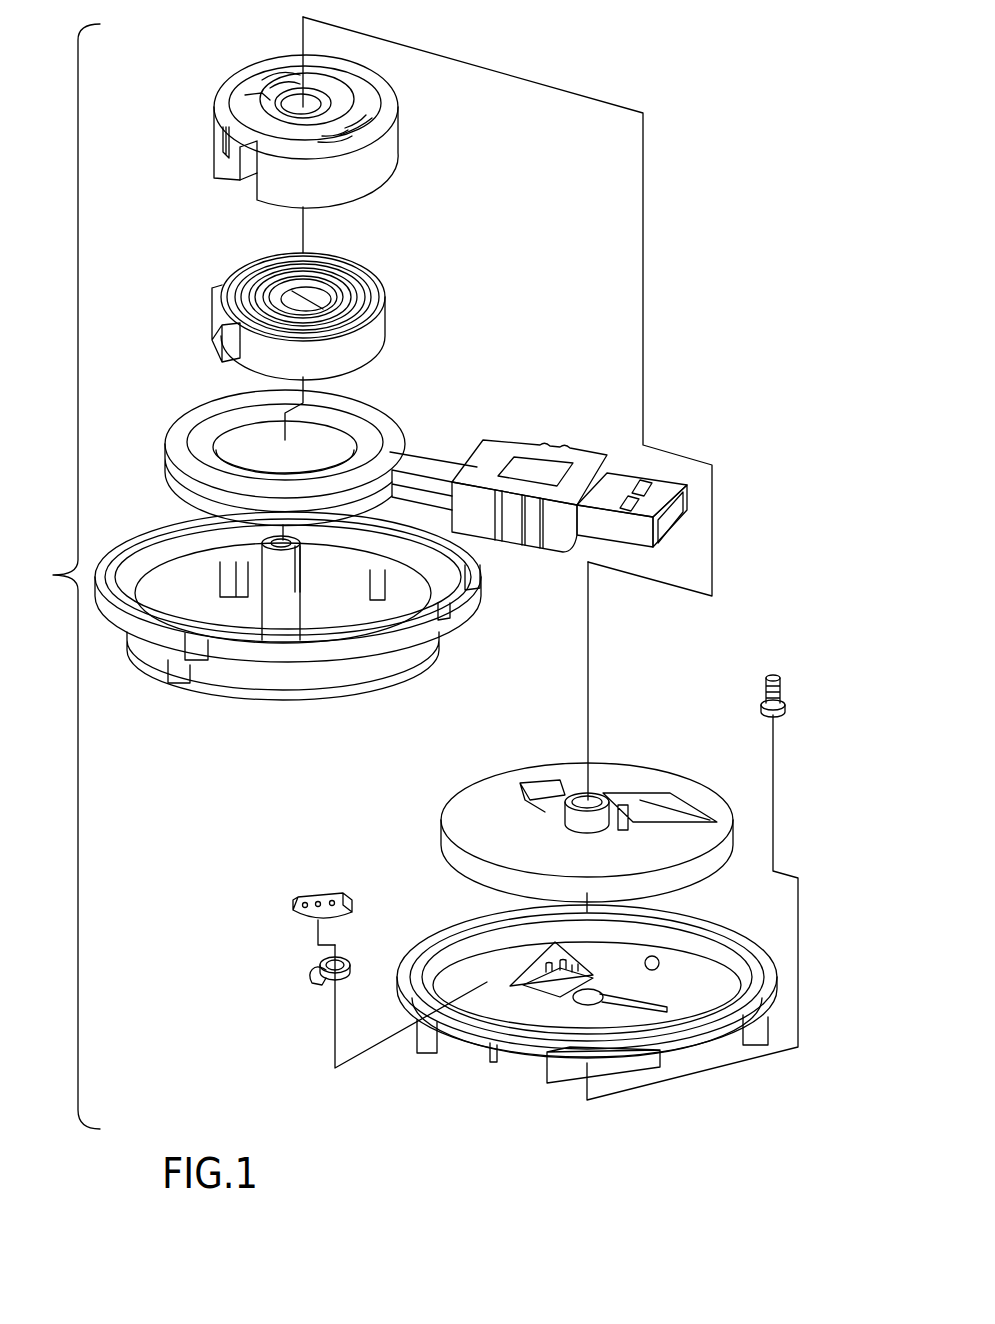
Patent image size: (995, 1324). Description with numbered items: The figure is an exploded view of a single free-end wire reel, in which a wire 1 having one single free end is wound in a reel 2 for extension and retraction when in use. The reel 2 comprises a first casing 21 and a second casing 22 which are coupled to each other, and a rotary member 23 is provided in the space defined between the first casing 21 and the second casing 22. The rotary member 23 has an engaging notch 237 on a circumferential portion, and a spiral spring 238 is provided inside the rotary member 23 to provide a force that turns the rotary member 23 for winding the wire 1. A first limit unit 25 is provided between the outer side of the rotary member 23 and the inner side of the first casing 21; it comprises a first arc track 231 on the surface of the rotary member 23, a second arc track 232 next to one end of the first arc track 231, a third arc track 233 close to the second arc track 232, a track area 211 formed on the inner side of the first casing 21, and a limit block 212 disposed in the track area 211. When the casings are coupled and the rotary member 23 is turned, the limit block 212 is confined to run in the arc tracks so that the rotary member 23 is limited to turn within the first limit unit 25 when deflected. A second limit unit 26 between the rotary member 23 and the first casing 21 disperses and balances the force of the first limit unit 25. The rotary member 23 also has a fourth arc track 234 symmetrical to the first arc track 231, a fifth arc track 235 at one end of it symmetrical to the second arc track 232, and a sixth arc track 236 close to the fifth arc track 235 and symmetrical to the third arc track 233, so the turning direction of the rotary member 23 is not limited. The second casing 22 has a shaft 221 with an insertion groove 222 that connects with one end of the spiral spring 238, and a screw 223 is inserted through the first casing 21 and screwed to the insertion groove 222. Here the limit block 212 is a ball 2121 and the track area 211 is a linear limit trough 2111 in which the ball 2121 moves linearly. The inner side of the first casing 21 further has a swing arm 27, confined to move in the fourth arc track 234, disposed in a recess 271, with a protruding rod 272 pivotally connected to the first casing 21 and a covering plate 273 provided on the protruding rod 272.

The wire 1 is at (200, 410).
The reel 2 is at (275, 828).
The first casing 21 is at (453, 935).
The second casing 22 is at (210, 698).
The rotary member 23 is at (195, 110).
The first limit unit 25 is at (60, 576).
The second limit unit 26 is at (393, 119).
The swing arm 27 is at (334, 975).
The track area 211 is at (640, 1085).
The limit block 212 is at (727, 1063).
The shaft 221 is at (291, 635).
The insertion groove 222 is at (302, 568).
The screw 223 is at (768, 677).
The first arc track 231 is at (335, 84).
The second arc track 232 is at (262, 93).
The third arc track 233 is at (278, 72).
The fourth arc track 234 is at (250, 150).
The fifth arc track 235 is at (370, 137).
The sixth arc track 236 is at (350, 138).
The engaging notch 237 is at (223, 140).
The spiral spring 238 is at (368, 349).
The recess 271 is at (543, 988).
The protruding rod 272 is at (312, 968).
The covering plate 273 is at (295, 911).
The linear limit trough 2111 is at (623, 1007).
The ball 2121 is at (658, 958).